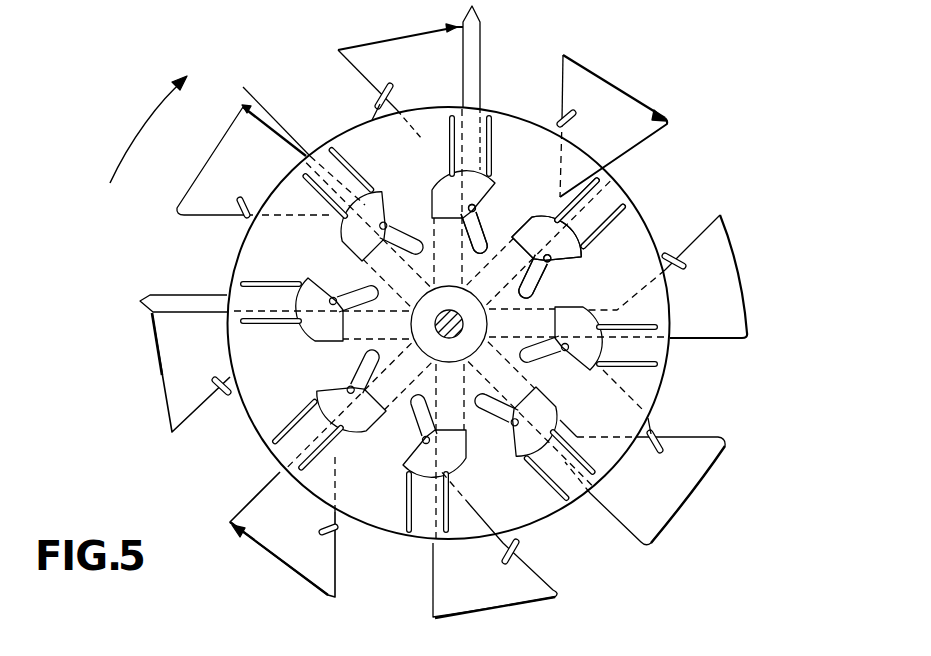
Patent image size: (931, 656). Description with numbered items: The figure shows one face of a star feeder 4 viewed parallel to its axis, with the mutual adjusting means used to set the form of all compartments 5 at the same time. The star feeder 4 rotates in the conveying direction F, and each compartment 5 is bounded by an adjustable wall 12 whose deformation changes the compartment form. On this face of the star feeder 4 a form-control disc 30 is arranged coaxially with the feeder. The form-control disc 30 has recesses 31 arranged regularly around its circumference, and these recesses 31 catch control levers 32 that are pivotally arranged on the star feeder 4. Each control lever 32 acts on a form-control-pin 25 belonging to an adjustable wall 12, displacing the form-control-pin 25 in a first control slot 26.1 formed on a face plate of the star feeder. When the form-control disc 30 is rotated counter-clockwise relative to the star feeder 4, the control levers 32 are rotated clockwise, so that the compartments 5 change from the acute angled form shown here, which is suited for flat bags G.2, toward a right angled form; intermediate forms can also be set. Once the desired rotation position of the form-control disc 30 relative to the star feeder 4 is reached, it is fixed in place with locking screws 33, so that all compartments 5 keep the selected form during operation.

The star feeder 4 is at (750, 268).
The compartment 5 is at (226, 470).
The wall 12 is at (523, 545).
The form-control-pin 25 is at (557, 420).
The first control slot 26.1 is at (560, 248).
The form-control disc 30 is at (510, 262).
The recesses 31 is at (507, 248).
The control levers 32 is at (557, 203).
The locking screws 33 is at (378, 268).
The flat bags G.2 is at (148, 296).
The conveying direction F is at (134, 143).